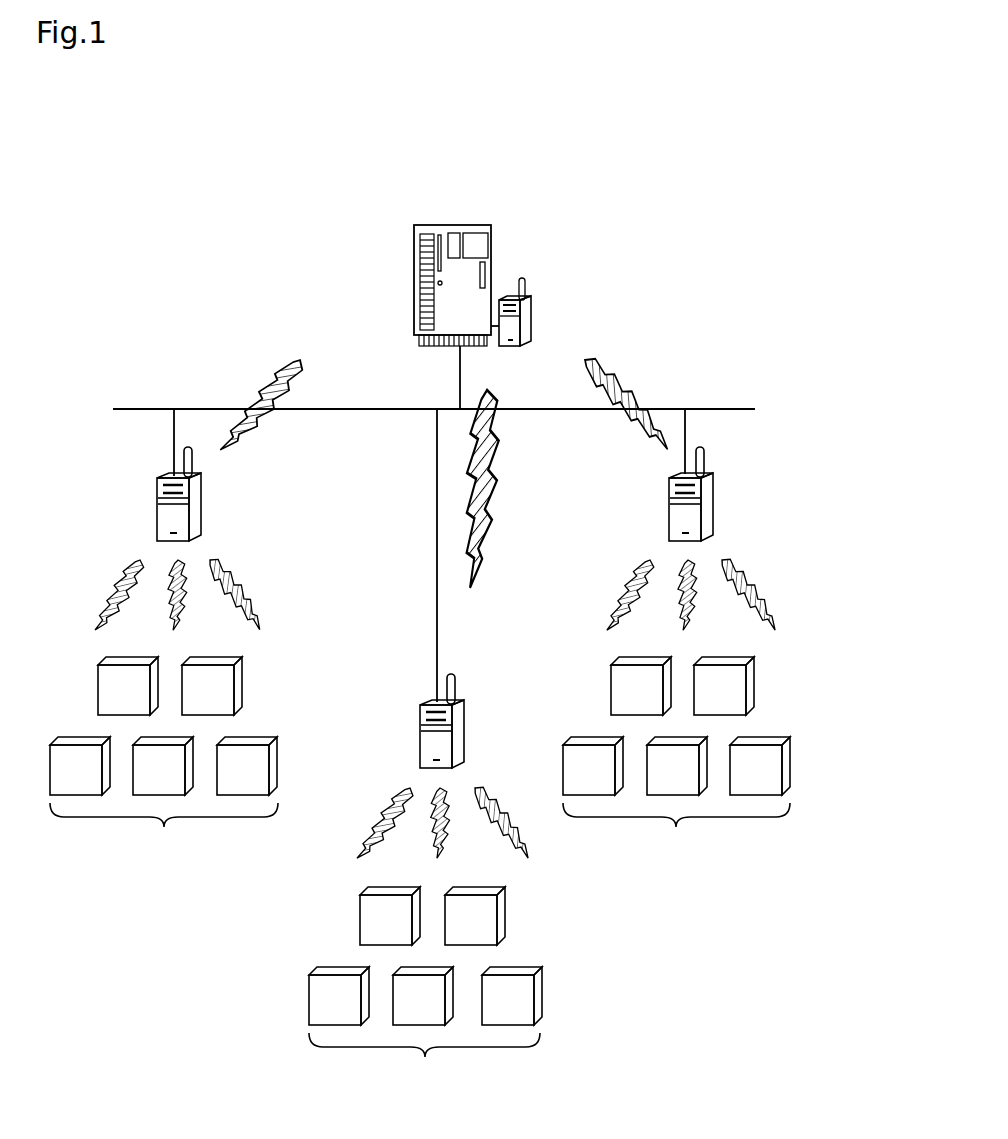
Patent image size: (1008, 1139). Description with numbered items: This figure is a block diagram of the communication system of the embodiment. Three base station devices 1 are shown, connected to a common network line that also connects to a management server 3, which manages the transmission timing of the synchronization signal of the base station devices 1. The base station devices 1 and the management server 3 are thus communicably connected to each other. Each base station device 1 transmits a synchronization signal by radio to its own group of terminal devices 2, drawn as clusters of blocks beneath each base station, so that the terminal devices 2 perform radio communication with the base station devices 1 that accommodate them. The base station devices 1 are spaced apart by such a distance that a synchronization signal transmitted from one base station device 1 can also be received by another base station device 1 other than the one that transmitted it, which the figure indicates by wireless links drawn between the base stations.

The base station device 1 is at (203, 496).
The terminal device 2 is at (420, 873).
The management server 3 is at (440, 225).